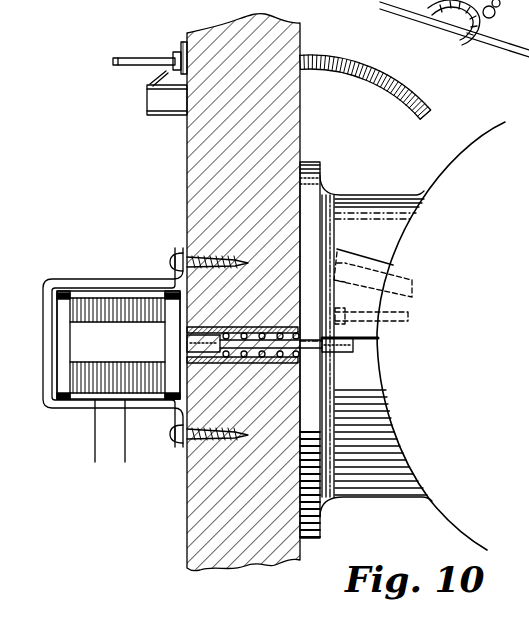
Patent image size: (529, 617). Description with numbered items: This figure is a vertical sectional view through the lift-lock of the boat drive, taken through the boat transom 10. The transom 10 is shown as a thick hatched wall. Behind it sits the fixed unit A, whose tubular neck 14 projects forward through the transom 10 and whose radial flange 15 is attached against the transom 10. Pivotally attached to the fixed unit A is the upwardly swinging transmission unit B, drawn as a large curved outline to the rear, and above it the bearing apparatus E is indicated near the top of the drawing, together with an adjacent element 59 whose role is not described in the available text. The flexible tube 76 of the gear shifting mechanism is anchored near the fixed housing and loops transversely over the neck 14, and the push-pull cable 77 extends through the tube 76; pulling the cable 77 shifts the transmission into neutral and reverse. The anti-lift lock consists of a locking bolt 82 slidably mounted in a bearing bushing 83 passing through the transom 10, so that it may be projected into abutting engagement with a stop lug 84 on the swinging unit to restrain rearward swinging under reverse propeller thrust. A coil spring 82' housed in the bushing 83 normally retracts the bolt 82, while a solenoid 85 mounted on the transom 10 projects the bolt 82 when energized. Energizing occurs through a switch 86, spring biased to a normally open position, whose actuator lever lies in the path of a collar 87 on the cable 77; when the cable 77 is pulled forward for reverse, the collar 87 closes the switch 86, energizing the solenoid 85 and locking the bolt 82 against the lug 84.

The boat transom 10 is at (197, 199).
The tubular neck 14 is at (378, 183).
The radial flange 15 is at (312, 162).
The clamp strap 59 is at (470, 46).
The flexible tube 76 is at (343, 40).
The push-pull cable 77 is at (116, 58).
The locking bolt 82 is at (339, 362).
The coil spring 82' is at (254, 322).
The bearing bushing 83 is at (243, 357).
The stop lug 84 is at (385, 270).
The solenoid 85 is at (113, 300).
The switch 86 is at (165, 114).
The collar 87 is at (183, 52).
The fixed unit A is at (391, 499).
The upwardly swinging transmission unit B is at (443, 160).
The bearing apparatus E is at (432, 16).